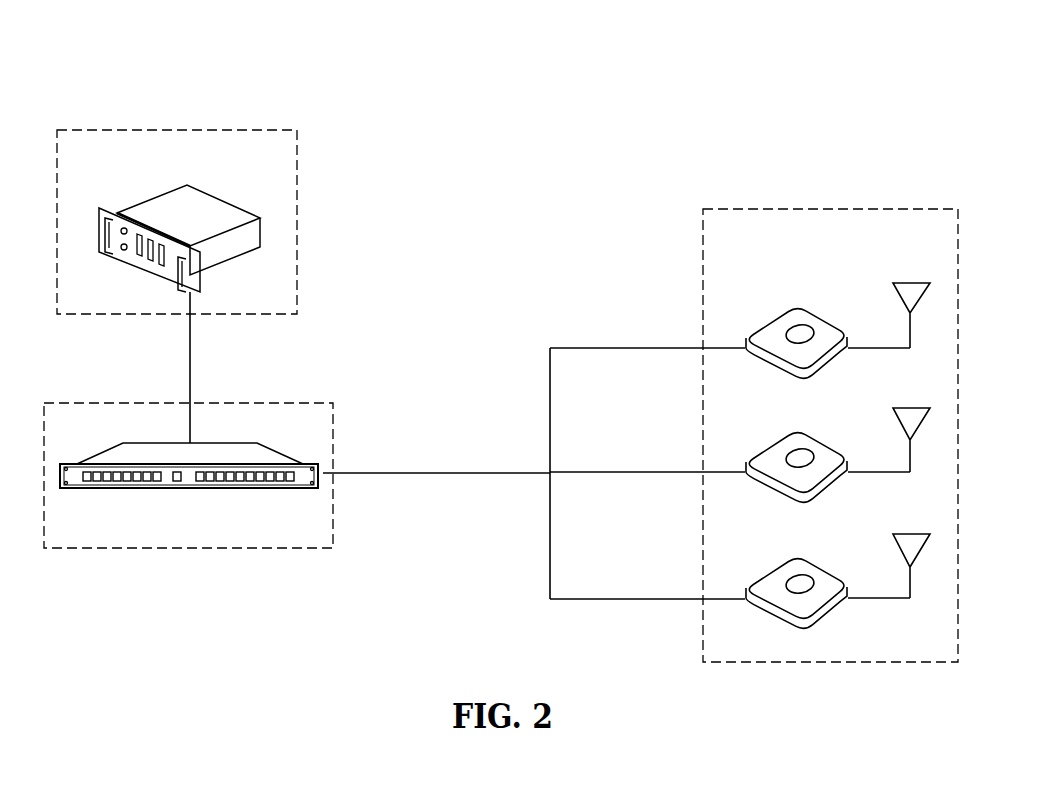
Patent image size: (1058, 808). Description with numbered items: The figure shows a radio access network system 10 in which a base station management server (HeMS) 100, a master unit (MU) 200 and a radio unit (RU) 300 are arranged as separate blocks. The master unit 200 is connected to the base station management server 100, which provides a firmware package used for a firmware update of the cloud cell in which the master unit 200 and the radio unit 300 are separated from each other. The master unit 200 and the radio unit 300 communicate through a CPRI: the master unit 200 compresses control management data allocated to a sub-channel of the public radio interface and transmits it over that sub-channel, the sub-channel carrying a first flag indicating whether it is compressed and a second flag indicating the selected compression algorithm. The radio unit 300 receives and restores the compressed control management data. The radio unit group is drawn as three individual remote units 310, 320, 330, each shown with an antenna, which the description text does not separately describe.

The radio access network system 10 is at (843, 42).
The base station management server (HeMS) 100 is at (262, 130).
The master unit (MU) 200 is at (297, 402).
The radio unit (RU) 300 is at (863, 209).
The remote unit (RU) 310 is at (823, 316).
The remote unit (RU) 320 is at (826, 446).
The remote unit (RU) 330 is at (826, 572).